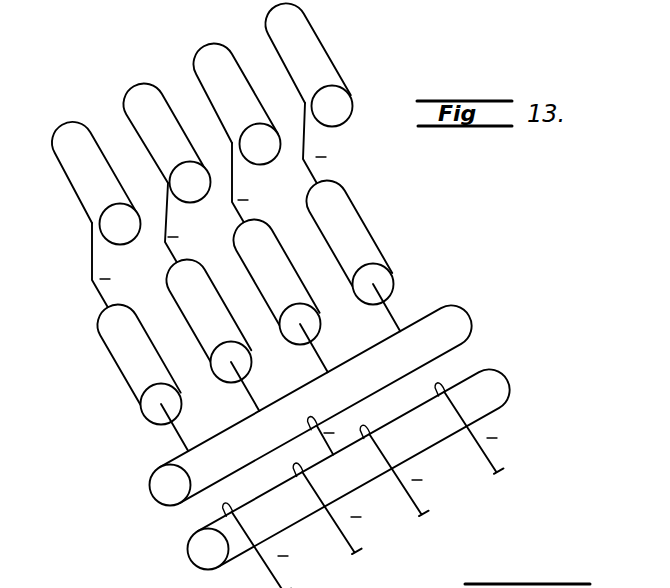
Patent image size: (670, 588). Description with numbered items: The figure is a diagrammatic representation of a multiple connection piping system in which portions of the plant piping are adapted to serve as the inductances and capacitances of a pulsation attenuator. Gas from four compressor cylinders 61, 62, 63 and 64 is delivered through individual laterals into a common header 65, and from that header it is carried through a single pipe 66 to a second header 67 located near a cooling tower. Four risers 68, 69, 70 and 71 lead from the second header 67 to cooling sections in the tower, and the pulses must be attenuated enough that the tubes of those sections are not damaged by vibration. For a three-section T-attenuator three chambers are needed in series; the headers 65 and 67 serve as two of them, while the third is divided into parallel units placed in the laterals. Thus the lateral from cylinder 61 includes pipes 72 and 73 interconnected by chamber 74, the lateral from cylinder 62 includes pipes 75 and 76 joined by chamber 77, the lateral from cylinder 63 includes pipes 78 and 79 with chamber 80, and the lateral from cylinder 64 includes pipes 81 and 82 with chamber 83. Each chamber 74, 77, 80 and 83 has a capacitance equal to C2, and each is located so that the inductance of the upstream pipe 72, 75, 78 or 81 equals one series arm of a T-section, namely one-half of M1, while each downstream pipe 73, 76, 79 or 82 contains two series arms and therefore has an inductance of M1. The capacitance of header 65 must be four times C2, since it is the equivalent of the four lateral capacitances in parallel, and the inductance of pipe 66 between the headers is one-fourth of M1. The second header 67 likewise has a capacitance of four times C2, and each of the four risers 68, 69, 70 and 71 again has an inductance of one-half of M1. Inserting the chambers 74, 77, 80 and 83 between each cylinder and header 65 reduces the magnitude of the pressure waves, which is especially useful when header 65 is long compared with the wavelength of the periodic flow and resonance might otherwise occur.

The compressor cylinder 61 is at (67, 176).
The compressor cylinder 62 is at (134, 88).
The compressor cylinder 63 is at (201, 48).
The compressor cylinder 64 is at (329, 57).
The common header 65 is at (444, 307).
The single pipe 66 is at (320, 436).
The second header 67 is at (496, 375).
The riser 68 is at (268, 567).
The riser 69 is at (341, 536).
The riser 70 is at (404, 492).
The riser 71 is at (489, 463).
The pipe 72 is at (92, 286).
The pipe 73 is at (179, 435).
The chamber 74 is at (121, 372).
The pipe 75 is at (165, 238).
The pipe 76 is at (252, 398).
The chamber 77 is at (199, 343).
The pipe 78 is at (232, 208).
The pipe 79 is at (319, 358).
The chamber 80 is at (265, 300).
The pipe 81 is at (303, 170).
The pipe 82 is at (392, 317).
The chamber 83 is at (337, 260).